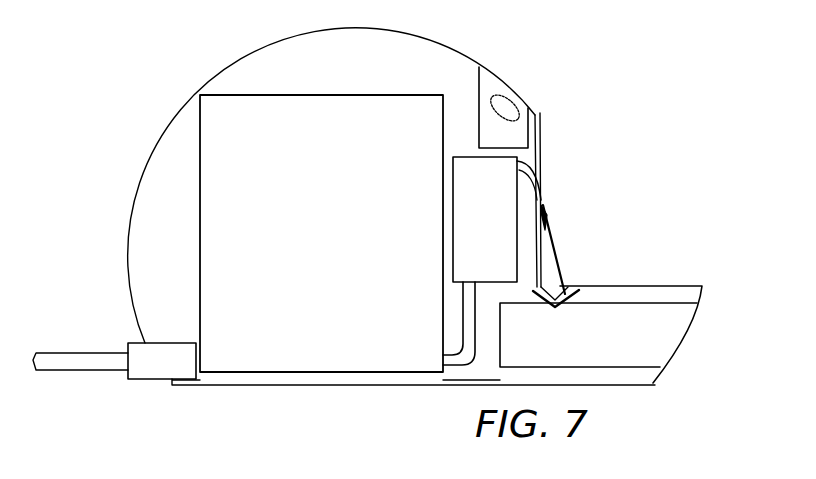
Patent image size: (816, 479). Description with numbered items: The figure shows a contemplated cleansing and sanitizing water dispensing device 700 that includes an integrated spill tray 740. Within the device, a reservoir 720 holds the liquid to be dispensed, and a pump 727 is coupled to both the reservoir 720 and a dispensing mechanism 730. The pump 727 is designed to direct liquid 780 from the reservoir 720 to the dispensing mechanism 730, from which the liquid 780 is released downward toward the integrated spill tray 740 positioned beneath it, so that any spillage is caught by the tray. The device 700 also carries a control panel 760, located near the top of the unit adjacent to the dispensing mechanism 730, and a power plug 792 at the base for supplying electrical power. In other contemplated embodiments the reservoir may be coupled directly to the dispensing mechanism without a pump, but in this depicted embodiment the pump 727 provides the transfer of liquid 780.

The cleansing and sanitizing water dispensing device 700 is at (642, 91).
The reservoir 720 is at (199, 143).
The pump 727 is at (500, 190).
The dispensing mechanism 730 is at (545, 197).
The integrated spill tray 740 is at (663, 338).
The control panel 760 is at (512, 105).
The liquid 780 is at (558, 258).
The power plug 792 is at (156, 380).